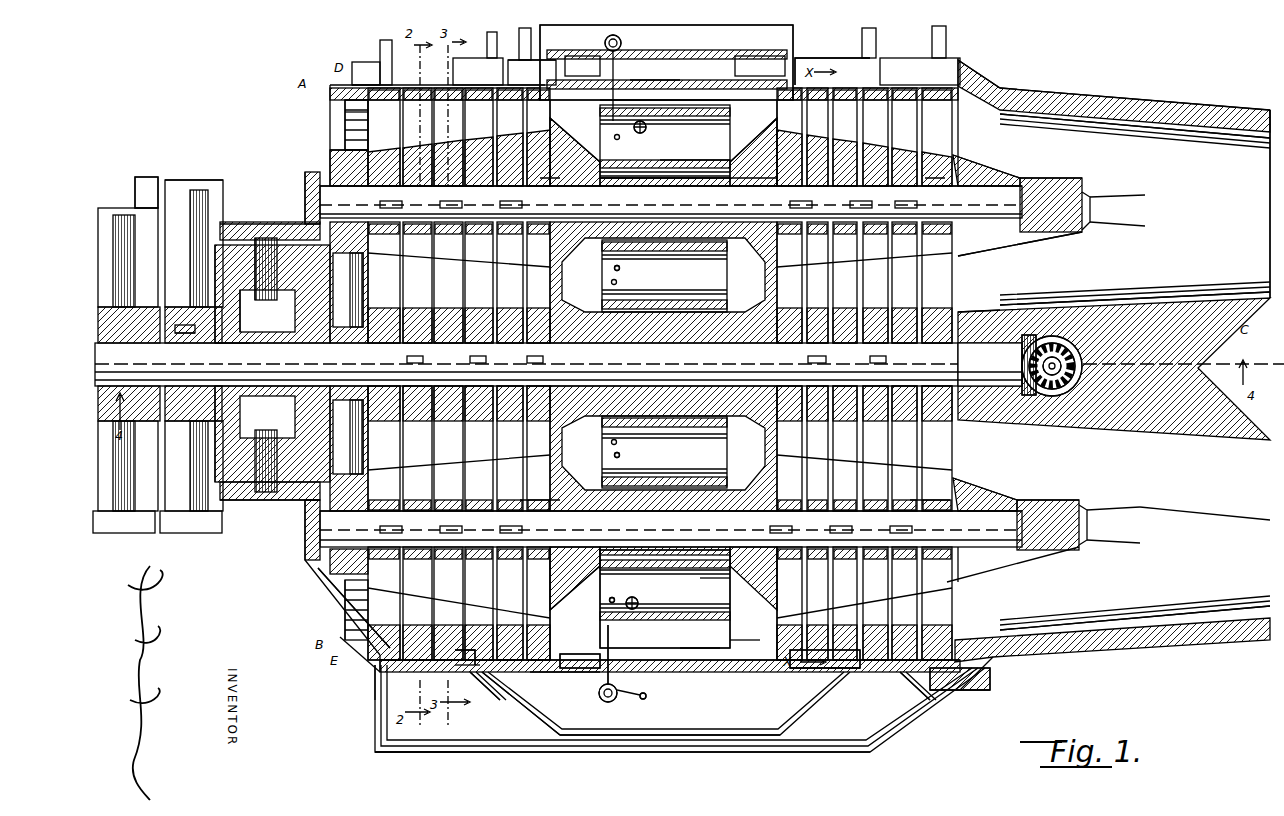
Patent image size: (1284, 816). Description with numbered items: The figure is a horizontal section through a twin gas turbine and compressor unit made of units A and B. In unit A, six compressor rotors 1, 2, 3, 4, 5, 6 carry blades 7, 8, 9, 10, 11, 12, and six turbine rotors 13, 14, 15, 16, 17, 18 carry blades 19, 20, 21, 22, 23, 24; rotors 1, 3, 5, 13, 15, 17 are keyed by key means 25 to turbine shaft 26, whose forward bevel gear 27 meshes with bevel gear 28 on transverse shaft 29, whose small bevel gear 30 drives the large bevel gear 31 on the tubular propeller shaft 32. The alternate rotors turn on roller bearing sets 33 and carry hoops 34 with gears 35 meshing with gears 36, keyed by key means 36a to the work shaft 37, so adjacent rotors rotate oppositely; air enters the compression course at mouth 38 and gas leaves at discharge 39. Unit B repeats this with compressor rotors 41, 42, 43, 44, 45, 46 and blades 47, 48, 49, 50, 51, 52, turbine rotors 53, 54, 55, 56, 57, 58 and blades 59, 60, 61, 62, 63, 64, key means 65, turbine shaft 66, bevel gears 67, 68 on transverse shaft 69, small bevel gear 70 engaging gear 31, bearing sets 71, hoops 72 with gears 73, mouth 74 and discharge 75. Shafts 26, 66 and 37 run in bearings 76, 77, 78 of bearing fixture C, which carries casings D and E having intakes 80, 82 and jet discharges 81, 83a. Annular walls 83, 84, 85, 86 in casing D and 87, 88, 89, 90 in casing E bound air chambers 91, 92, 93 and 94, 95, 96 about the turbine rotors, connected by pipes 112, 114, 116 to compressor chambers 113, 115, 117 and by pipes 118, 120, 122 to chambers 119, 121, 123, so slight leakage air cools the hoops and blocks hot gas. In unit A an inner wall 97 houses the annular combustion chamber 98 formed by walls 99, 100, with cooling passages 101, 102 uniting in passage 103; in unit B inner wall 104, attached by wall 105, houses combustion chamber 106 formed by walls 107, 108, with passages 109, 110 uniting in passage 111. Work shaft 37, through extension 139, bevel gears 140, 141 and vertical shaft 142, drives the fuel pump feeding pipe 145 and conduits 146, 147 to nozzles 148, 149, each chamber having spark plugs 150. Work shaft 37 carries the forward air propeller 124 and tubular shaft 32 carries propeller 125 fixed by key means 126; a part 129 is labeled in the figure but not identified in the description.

The compressor rotor 1 is at (388, 150).
The compressor rotor 2 is at (417, 146).
The compressor rotor 3 is at (448, 142).
The compressor rotor 4 is at (480, 139).
The compressor rotor 5 is at (510, 135).
The compressor rotor 6 is at (539, 133).
The compressor blades 7 is at (384, 282).
The compressor blades 8 is at (417, 282).
The compressor blades 9 is at (448, 282).
The compressor blades 10 is at (479, 282).
The compressor blades 11 is at (510, 282).
The compressor blades 12 is at (538, 282).
The turbine rotor 13 is at (792, 134).
The turbine rotor 14 is at (817, 137).
The turbine rotor 15 is at (845, 140).
The turbine rotor 16 is at (876, 144).
The turbine rotor 17 is at (905, 148).
The turbine rotor 18 is at (938, 153).
The turbine blades 19 is at (789, 282).
The turbine blades 20 is at (817, 282).
The turbine blades 21 is at (845, 282).
The turbine blades 22 is at (875, 282).
The turbine blades 23 is at (904, 282).
The turbine blades 24 is at (937, 282).
The key means 25 is at (385, 203).
The turbine shaft 26 is at (1060, 196).
The bevel gear 27 is at (312, 175).
The bevel gear 28 is at (236, 224).
The short transverse shaft 29 is at (268, 240).
The small bevel gear 30 is at (250, 268).
The large bevel gear 31 is at (280, 313).
The short propeller shaft 32 is at (229, 344).
The roller bearing sets 33 is at (930, 178).
The hoops 34 is at (952, 100).
The spiral spur gears 35 is at (985, 102).
The spur gears 36 is at (880, 360).
The key means 36a is at (808, 359).
The work shaft 37 is at (990, 318).
The air compression course mouth 38 is at (345, 145).
The gas course discharge 39 is at (1020, 244).
The compressor rotor 41 is at (384, 603).
The compressor rotor 42 is at (417, 603).
The compressor rotor 43 is at (448, 603).
The compressor rotor 44 is at (479, 603).
The compressor rotor 45 is at (510, 603).
The compressor rotor 46 is at (538, 603).
The compressor blades 47 is at (384, 448).
The compressor blades 48 is at (417, 448).
The compressor blades 49 is at (448, 448).
The compressor blades 50 is at (479, 448).
The compressor blades 51 is at (510, 448).
The compressor blades 52 is at (540, 440).
The turbine rotor 53 is at (790, 600).
The turbine rotor 54 is at (817, 603).
The turbine rotor 55 is at (845, 603).
The turbine rotor 56 is at (875, 603).
The turbine rotor 57 is at (904, 603).
The turbine rotor 58 is at (945, 585).
The turbine blades 59 is at (777, 438).
The turbine blades 60 is at (817, 448).
The turbine blades 61 is at (845, 448).
The turbine blades 62 is at (875, 448).
The turbine blades 63 is at (904, 448).
The turbine blades 64 is at (935, 452).
The key means 65 is at (790, 518).
The turbine shaft 66 is at (1020, 506).
The bevel gear 67 is at (305, 555).
The bevel gear 68 is at (298, 509).
The short transverse shaft 69 is at (260, 498).
The small bevel gear 70 is at (245, 466).
The roller bearing sets 71 is at (925, 504).
The hoops 72 is at (940, 616).
The spiral spur gears 73 is at (962, 668).
The air compression course mouth 74 is at (345, 592).
The gas course discharge 75 is at (1005, 622).
The bearings 76 is at (1035, 176).
The bearings 77 is at (1000, 492).
The bearings 78 is at (1160, 300).
The air intake 80 is at (345, 102).
The jet discharge 81 is at (1270, 195).
The air intake 82 is at (335, 628).
The annular wall 83 is at (478, 71).
The jet discharge 83a is at (1255, 548).
The annular wall 84 is at (532, 72).
The annular wall 85 is at (845, 60).
The annular wall 86 is at (964, 62).
The annular wall 87 is at (462, 658).
The annular wall 88 is at (495, 692).
The annular wall 89 is at (845, 670).
The annular wall 90 is at (965, 680).
The annular air chamber 91 is at (770, 93).
The annular air chamber 92 is at (900, 60).
The annular air chamber 93 is at (980, 75).
The annular air chamber 94 is at (792, 672).
The annular air chamber 95 is at (905, 690).
The annular air chamber 96 is at (948, 676).
The inner annular wall 97 is at (650, 78).
The annular combustion chamber 98 is at (785, 70).
The annular wall 99 is at (648, 127).
The annular wall 100 is at (712, 146).
The annular air passage 101 is at (660, 100).
The annular air passage 102 is at (598, 150).
The annular passage 103 is at (742, 170).
The inner wall 104 is at (750, 740).
The annular perpendicular wall 105 is at (580, 661).
The annular combustion chamber 106 is at (665, 599).
The annular wall 107 is at (632, 648).
The annular wall 108 is at (640, 603).
The annular air passage 109 is at (722, 583).
The annular air passage 110 is at (696, 648).
The annular passage 111 is at (745, 630).
The pipe 112 is at (750, 40).
The annular chamber 113 is at (524, 58).
The pipe 114 is at (873, 40).
The annular chamber 115 is at (488, 32).
The pipe 116 is at (946, 32).
The annular chamber 117 is at (375, 75).
The pipe 118 is at (570, 735).
The annular chamber 119 is at (548, 670).
The pipe 120 is at (518, 740).
The annular chamber 121 is at (470, 700).
The pipe 122 is at (425, 746).
The annular chamber 123 is at (380, 680).
The air propeller 124 is at (150, 185).
The air propeller 125 is at (195, 180).
The key means 126 is at (180, 344).
The wall 129 is at (575, 590).
The small extension 139 is at (1030, 345).
The small bevel gear 140 is at (1030, 396).
The larger bevel gear 141 is at (1070, 388).
The vertical shaft 142 is at (1060, 360).
The fuel pipe 145 is at (645, 700).
The common fuel conduit 146 is at (604, 44).
The common fuel conduit 147 is at (608, 703).
The fuel nozzles 148 is at (620, 268).
The fuel nozzles 149 is at (620, 455).
The spark plugs 150 is at (608, 601).